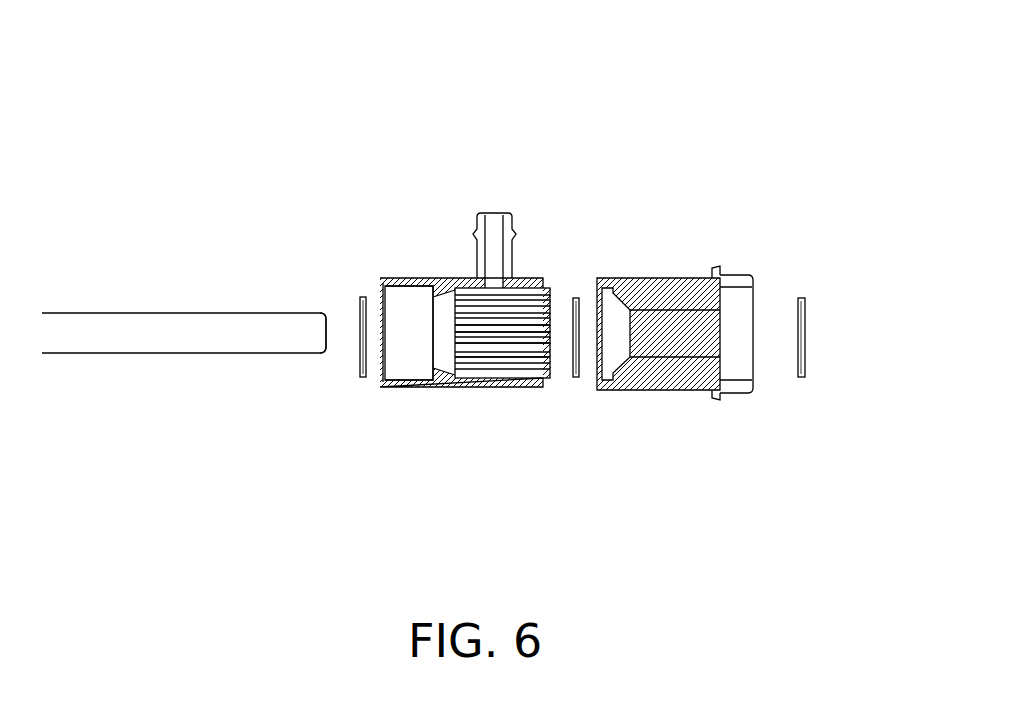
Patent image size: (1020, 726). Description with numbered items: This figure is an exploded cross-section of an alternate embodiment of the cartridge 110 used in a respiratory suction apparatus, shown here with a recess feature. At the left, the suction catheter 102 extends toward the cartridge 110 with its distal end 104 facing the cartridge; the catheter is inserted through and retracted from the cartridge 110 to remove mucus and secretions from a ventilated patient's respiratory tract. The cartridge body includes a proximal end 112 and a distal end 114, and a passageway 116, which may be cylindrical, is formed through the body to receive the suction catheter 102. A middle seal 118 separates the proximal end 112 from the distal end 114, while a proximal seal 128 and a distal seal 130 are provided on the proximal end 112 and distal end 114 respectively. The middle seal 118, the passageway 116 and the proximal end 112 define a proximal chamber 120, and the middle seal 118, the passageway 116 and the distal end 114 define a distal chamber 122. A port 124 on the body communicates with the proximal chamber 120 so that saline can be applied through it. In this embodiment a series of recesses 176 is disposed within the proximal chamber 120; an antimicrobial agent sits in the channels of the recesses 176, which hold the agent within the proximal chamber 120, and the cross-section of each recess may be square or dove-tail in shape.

The cartridge 110 is at (638, 160).
The suction catheter 102 is at (173, 340).
The distal end 104 is at (330, 352).
The proximal seal 128 is at (362, 298).
The proximal end 112 is at (403, 387).
The passageway 116 is at (410, 305).
The port 124 is at (483, 215).
The recesses 176 is at (520, 342).
The proximal chamber 120 is at (546, 365).
The middle seal 118 is at (576, 296).
The distal end 114 is at (698, 383).
The distal chamber 122 is at (677, 332).
The distal seal 130 is at (803, 300).